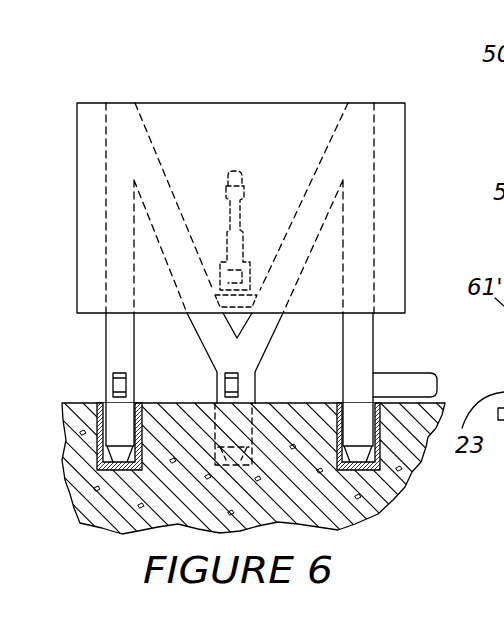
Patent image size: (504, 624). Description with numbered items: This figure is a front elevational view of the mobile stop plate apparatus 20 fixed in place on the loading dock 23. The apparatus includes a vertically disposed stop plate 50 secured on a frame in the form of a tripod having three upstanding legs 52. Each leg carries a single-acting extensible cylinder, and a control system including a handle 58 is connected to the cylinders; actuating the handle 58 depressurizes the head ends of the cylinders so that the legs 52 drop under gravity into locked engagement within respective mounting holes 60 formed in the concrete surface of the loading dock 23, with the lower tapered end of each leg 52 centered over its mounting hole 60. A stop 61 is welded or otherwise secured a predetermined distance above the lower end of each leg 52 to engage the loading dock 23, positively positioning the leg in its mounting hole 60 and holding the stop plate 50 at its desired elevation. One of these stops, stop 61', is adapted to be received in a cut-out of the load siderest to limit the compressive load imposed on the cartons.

The mobile stop plate apparatus 20 is at (243, 100).
The loading dock 23 is at (428, 406).
The stop plate 50 is at (392, 160).
The legs 52 is at (115, 342).
The handle 58 is at (238, 183).
The mounting hole 60 is at (104, 421).
The stop 61 is at (303, 361).
The stop 61' is at (147, 359).